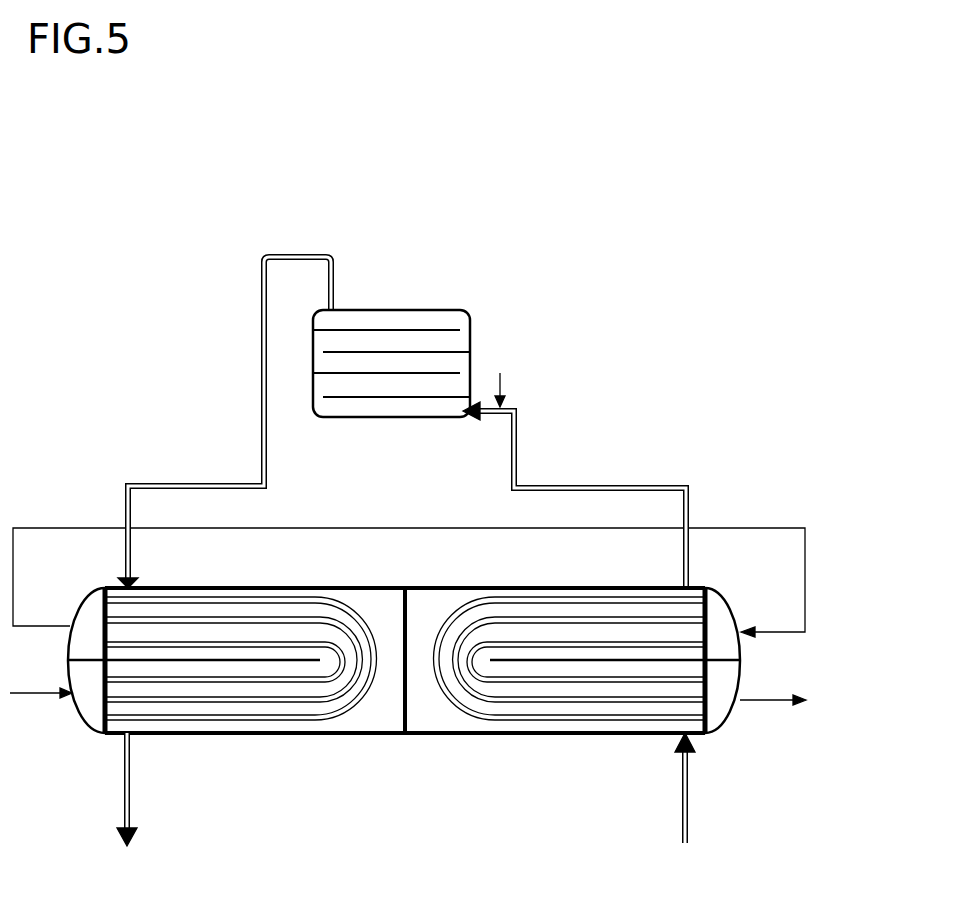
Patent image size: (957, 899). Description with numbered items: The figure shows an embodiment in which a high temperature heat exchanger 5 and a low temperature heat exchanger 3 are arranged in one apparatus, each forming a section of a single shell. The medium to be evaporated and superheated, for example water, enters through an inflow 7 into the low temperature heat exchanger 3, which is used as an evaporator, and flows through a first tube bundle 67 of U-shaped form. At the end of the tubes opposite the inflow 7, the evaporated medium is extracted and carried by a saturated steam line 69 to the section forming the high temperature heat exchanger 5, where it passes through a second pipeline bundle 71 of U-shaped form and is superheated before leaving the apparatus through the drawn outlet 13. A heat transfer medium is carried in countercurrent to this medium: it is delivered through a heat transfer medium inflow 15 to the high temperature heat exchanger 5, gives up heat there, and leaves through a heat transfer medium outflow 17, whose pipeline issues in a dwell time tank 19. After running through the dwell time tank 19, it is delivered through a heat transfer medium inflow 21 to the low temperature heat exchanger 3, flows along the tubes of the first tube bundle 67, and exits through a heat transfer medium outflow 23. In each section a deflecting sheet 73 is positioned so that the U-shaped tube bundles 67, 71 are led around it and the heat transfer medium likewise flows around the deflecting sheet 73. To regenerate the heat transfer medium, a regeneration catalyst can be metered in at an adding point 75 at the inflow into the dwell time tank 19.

The low temperature heat exchanger 3 is at (238, 735).
The high temperature heat exchanger 5 is at (552, 735).
The inflow 7 is at (38, 697).
The working fluid outlet 13 is at (771, 706).
The heat transfer medium inflow 15 is at (690, 808).
The heat transfer medium outflow 17 is at (606, 482).
The dwell time tank 19 is at (413, 308).
The heat transfer medium inflow 21 is at (190, 482).
The heat transfer medium outflow 23 is at (119, 806).
The first tube bundle 67 is at (327, 735).
The saturated steam line 69 is at (55, 527).
The second pipeline bundle 71 is at (490, 735).
The deflecting sheet 73 is at (165, 735).
The adding point 75 is at (507, 383).